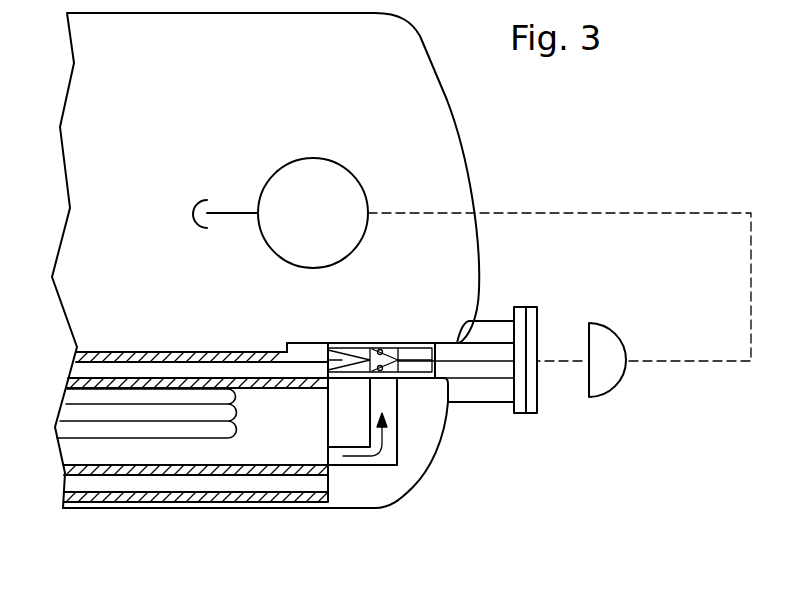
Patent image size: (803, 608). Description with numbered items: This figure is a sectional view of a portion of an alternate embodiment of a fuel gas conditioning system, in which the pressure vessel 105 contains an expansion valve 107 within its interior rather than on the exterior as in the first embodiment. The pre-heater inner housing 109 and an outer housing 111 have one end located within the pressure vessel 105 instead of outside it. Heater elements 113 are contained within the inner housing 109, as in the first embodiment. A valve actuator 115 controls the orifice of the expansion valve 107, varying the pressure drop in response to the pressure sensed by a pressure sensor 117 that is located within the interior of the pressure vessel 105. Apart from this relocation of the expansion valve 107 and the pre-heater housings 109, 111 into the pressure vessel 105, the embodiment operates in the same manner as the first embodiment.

The pressure vessel 105 is at (460, 130).
The expansion valve 107 is at (420, 342).
The pre-heater inner housing 109 is at (150, 475).
The tube 111 is at (180, 352).
The heater elements 113 is at (237, 433).
The valve actuator 115 is at (487, 362).
The pressure sensor 117 is at (316, 158).